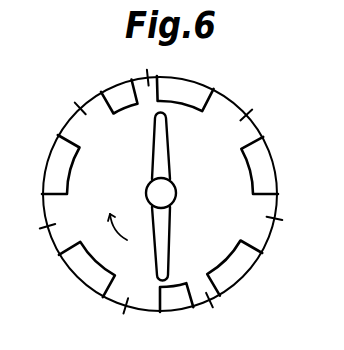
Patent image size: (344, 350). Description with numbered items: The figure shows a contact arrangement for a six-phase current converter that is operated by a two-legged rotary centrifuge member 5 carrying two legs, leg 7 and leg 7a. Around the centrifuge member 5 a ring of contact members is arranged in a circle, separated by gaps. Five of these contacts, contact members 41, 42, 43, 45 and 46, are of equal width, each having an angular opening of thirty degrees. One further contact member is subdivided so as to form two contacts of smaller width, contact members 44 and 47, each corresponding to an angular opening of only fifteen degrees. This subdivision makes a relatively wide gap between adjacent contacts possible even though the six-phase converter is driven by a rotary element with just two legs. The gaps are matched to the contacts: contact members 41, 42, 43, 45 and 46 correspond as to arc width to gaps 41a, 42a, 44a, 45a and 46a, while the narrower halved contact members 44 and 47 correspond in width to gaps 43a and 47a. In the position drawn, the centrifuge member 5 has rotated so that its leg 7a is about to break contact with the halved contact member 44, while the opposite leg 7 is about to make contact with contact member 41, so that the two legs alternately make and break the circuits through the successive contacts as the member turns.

The centrifuge member 5 is at (190, 174).
The leg 7 is at (169, 123).
The leg 7a is at (158, 270).
The contact member 41 is at (215, 86).
The contact member 42 is at (270, 153).
The contact member 43 is at (242, 270).
The contact member 44 is at (177, 311).
The contact member 45 is at (81, 272).
The contact member 46 is at (58, 149).
The contact member 47 is at (104, 92).
The gap 41a is at (247, 113).
The gap 42a is at (272, 218).
The gap 43a is at (210, 299).
The gap 44a is at (115, 317).
The gap 45a is at (55, 225).
The gap 46a is at (81, 108).
The gap 47a is at (157, 66).